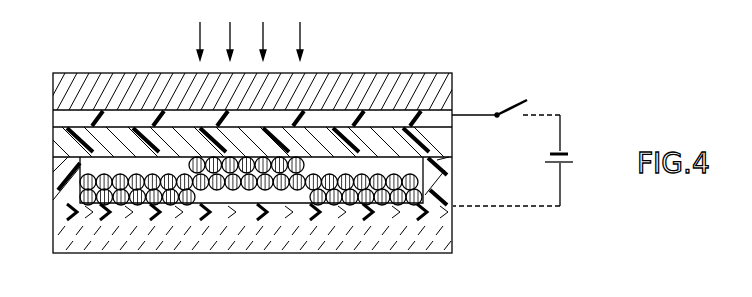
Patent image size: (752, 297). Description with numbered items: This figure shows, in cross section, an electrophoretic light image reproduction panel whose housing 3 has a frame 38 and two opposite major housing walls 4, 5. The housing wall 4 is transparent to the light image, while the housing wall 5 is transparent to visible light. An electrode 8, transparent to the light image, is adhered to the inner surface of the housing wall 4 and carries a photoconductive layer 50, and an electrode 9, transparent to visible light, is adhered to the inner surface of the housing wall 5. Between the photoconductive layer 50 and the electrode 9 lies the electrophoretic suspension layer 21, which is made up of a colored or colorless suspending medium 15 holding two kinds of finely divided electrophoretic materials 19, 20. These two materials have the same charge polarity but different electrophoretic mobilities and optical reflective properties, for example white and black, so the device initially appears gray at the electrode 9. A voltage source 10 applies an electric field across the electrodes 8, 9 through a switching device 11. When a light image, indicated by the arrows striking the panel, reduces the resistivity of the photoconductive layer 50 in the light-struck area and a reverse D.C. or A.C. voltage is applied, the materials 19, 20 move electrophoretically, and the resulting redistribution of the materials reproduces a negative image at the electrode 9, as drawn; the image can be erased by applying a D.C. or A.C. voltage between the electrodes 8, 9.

The housing 3 is at (46, 72).
The housing wall 4 is at (53, 92).
The electrode 8 is at (53, 117).
The photoconductive layer 50 is at (55, 146).
The frame 38 is at (60, 180).
The electrode 9 is at (55, 211).
The housing wall 5 is at (40, 238).
The electrophoretic material 20 is at (187, 205).
The electrophoretic material 19 is at (230, 205).
The suspending medium 15 is at (265, 192).
The electrophoretic suspension layer 21 is at (302, 199).
The switching device 11 is at (515, 98).
The voltage source 10 is at (566, 149).